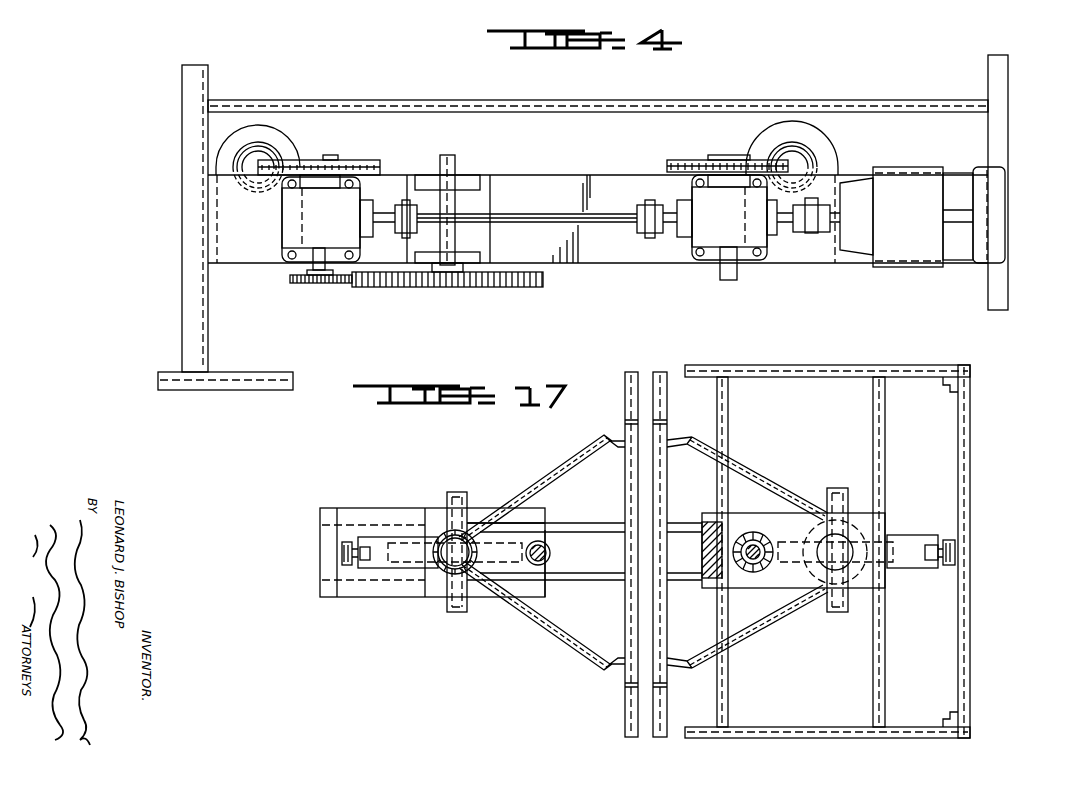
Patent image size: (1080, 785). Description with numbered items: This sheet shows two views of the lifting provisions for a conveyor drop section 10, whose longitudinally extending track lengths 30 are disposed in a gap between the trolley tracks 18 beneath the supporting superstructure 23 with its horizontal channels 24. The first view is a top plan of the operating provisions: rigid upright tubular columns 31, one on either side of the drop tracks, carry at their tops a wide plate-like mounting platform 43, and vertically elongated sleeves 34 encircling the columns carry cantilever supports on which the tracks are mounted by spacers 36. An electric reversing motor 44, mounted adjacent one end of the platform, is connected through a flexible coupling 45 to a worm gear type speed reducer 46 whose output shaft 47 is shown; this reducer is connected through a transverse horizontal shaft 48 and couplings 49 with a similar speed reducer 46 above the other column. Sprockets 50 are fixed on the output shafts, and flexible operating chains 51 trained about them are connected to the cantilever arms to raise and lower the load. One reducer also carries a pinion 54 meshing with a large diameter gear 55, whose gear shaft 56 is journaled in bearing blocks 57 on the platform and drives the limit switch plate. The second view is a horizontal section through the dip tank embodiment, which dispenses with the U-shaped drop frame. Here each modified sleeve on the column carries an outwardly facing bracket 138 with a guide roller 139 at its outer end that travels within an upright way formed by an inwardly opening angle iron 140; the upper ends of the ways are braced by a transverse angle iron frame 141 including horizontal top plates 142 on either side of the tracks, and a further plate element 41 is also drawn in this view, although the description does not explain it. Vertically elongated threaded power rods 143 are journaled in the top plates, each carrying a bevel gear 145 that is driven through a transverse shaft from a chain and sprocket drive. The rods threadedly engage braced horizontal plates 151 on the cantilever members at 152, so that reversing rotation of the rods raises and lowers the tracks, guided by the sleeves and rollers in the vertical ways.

In FIG. 4, the drop section 10 is at (1027, 277).
In FIG. 17, the track 18 is at (640, 375).
In FIG. 4, the supporting superstructure 23 is at (176, 318).
In FIG. 4, the horizontal channels 24 is at (192, 198).
In FIG. 17, the track lengths 30 is at (632, 485).
In FIG. 4, the tubular columns 31 is at (290, 160).
In FIG. 17, the tubular columns 31 is at (462, 530).
In FIG. 4, the sleeves 34 is at (815, 145).
In FIG. 17, the spacers 36 is at (615, 440).
In FIG. 17, the cross plate 41 is at (458, 613).
In FIG. 4, the mounting platform 43 is at (618, 265).
In FIG. 4, the electric reversing motor 44 is at (960, 248).
In FIG. 4, the flexible coupling 45 is at (809, 235).
In FIG. 4, the speed reducer 46 is at (292, 232).
In FIG. 4, the output shaft 47 is at (318, 265).
In FIG. 4, the transverse horizontal shaft 48 is at (546, 218).
In FIG. 4, the couplings 49 is at (402, 232).
In FIG. 4, the sprockets 50 is at (368, 158).
In FIG. 4, the flexible operating chains 51 is at (270, 160).
In FIG. 4, the pinion 54 is at (322, 282).
In FIG. 4, the gear 55 is at (480, 286).
In FIG. 4, the gear shaft 56 is at (448, 240).
In FIG. 4, the bearing blocks 57 is at (470, 172).
In FIG. 17, the bracket 138 is at (395, 560).
In FIG. 17, the guide roller 139 is at (356, 575).
In FIG. 17, the angle iron 140 is at (340, 557).
In FIG. 17, the angle iron frame 141 is at (983, 489).
In FIG. 17, the top plates 142 is at (780, 525).
In FIG. 17, the power rods 143 is at (550, 555).
In FIG. 17, the bevel gear 145 is at (765, 566).
In FIG. 17, the horizontal plates 151 is at (545, 538).
In FIG. 17, the threaded engagement 152 is at (548, 575).